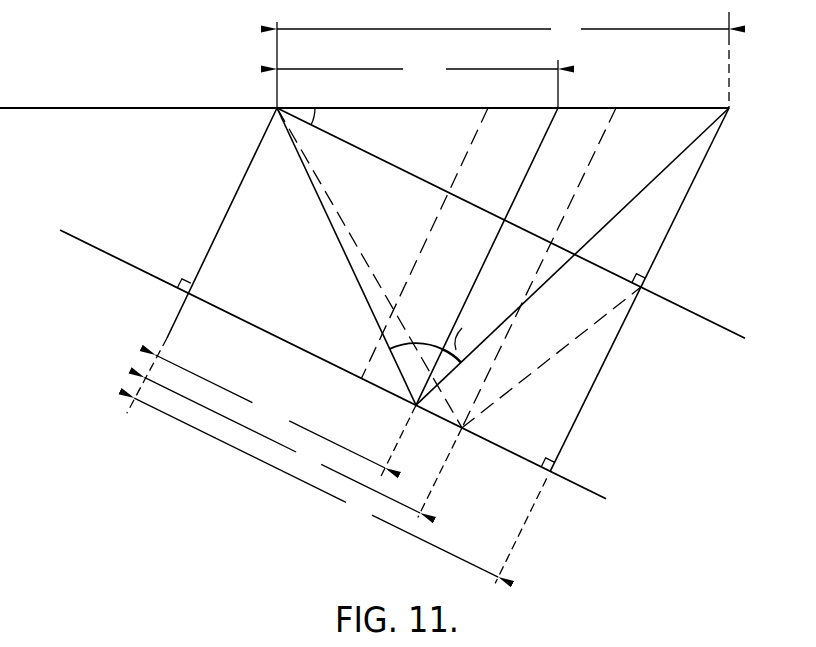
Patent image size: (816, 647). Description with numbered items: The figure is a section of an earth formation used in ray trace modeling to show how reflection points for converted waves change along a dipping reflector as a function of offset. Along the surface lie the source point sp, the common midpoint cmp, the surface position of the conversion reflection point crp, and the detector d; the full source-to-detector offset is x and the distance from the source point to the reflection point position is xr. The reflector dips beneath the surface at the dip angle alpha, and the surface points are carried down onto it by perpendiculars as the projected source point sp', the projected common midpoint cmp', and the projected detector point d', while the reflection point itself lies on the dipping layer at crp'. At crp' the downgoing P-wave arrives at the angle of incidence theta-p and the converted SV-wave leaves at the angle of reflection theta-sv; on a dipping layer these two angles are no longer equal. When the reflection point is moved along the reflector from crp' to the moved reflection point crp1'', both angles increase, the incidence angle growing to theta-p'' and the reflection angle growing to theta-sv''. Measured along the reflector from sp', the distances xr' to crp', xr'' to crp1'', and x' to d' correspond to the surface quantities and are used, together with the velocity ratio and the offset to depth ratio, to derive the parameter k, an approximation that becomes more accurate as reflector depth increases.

The source point sp is at (266, 65).
The common midpoint cmp is at (436, 230).
The conversion reflection point crp is at (503, 232).
The detector d is at (581, 241).
The offset x is at (503, 29).
The reflection point offset xr is at (417, 69).
The dip angle alpha is at (323, 119).
The projected source point sp' is at (202, 260).
The projected common midpoint cmp' is at (325, 390).
The conversion reflection point on dipping layer crp' is at (346, 294).
The moved conversion reflection point crp1'' is at (459, 313).
The projected detector point d' is at (525, 521).
The angle of incidence theta-p is at (416, 333).
The angle of reflection theta-sv is at (465, 337).
The increased angle of reflection theta-sv'' is at (518, 358).
The increased angle of incidence theta-p'' is at (459, 392).
The projected reflection point distance xr' is at (271, 411).
The projected moved reflection point distance xr'' is at (282, 445).
The projected offset x' is at (316, 487).